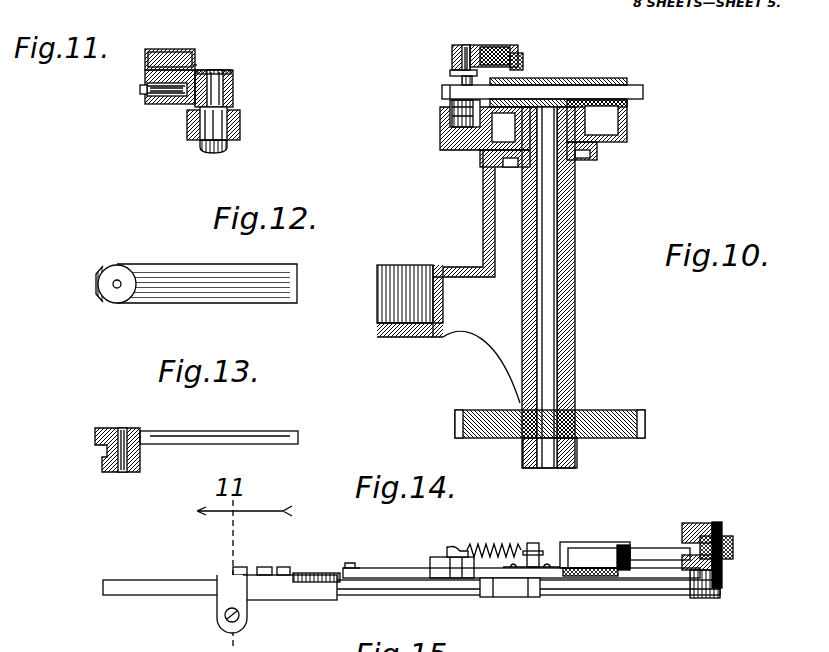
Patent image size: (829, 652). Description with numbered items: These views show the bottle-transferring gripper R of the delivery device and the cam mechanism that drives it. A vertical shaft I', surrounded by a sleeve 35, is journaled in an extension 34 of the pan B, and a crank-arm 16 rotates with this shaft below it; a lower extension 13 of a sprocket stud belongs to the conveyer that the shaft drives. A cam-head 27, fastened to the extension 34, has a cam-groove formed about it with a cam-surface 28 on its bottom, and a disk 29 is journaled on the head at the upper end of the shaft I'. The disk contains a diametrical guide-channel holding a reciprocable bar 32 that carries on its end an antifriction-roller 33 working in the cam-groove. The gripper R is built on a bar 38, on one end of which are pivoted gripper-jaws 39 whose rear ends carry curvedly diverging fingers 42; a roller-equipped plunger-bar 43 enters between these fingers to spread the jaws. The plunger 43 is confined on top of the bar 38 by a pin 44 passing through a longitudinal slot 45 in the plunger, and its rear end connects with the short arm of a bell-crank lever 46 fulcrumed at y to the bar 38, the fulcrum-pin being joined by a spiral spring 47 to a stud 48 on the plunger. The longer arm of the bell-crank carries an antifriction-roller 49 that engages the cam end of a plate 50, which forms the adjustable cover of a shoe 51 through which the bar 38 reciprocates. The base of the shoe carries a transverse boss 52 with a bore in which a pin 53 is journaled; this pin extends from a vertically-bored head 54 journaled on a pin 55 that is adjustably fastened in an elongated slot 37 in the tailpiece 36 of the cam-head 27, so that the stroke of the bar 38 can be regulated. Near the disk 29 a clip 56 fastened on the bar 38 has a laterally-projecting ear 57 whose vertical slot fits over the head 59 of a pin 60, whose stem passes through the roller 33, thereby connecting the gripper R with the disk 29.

In FIG. 11, the bar 38 is at (147, 60).
In FIG. 10, the bar 38 is at (520, 53).
In FIG. 14, the bar 38 is at (133, 583).
In FIG. 11, the cam-plate 50 is at (170, 56).
In FIG. 14, the cam-plate 50 is at (262, 580).
In FIG. 11, the shoe 51 is at (196, 66).
In FIG. 14, the shoe 51 is at (263, 600).
In FIG. 11, the boss 52 is at (168, 105).
In FIG. 11, the pin 53 is at (145, 97).
In FIG. 14, the pin 53 is at (215, 622).
In FIG. 11, the head 54 is at (233, 86).
In FIG. 11, the pin 55 is at (215, 73).
In FIG. 11, the tailpiece 36 is at (197, 141).
In FIG. 11, the slot 37 is at (222, 128).
In FIG. 12, the reciprocable bar 32 is at (181, 278).
In FIG. 13, the reciprocable bar 32 is at (272, 440).
In FIG. 10, the reciprocable bar 32 is at (643, 93).
In FIG. 12, the antifriction-roller 33 is at (115, 280).
In FIG. 13, the antifriction-roller 33 is at (100, 466).
In FIG. 10, the antifriction-roller 33 is at (450, 123).
In FIG. 10, the ear 57 is at (452, 64).
In FIG. 14, the ear 57 is at (505, 590).
In FIG. 10, the head 59 is at (465, 45).
In FIG. 10, the plunger-bar 43 is at (497, 46).
In FIG. 14, the plunger-bar 43 is at (615, 576).
In FIG. 10, the clip 56 is at (523, 61).
In FIG. 14, the clip 56 is at (537, 598).
In FIG. 10, the disk 29 is at (598, 79).
In FIG. 10, the cam-surface 28 is at (440, 157).
In FIG. 10, the pin 60 is at (460, 150).
In FIG. 10, the cam-head 27 is at (627, 127).
In FIG. 10, the sleeve 35 is at (575, 238).
In FIG. 10, the vertical shaft I' is at (581, 287).
In FIG. 10, the extension 34 is at (462, 268).
In FIG. 10, the pan B is at (437, 290).
In FIG. 10, the lower extension 13 is at (467, 417).
In FIG. 10, the crank-arm 16 is at (577, 458).
In FIG. 14, the bell-crank lever 46 is at (521, 553).
In FIG. 14, the bottle-transferring gripper R is at (330, 538).
In FIG. 14, the antifriction-roller 49 is at (340, 575).
In FIG. 14, the fulcrum Y is at (452, 552).
In FIG. 14, the spiral spring 47 is at (487, 544).
In FIG. 14, the stud 48 is at (540, 536).
In FIG. 14, the longitudinal slot 45 is at (582, 545).
In FIG. 14, the pin 44 is at (603, 556).
In FIG. 14, the fingers 42 is at (645, 550).
In FIG. 14, the gripper-jaws 39 is at (715, 540).